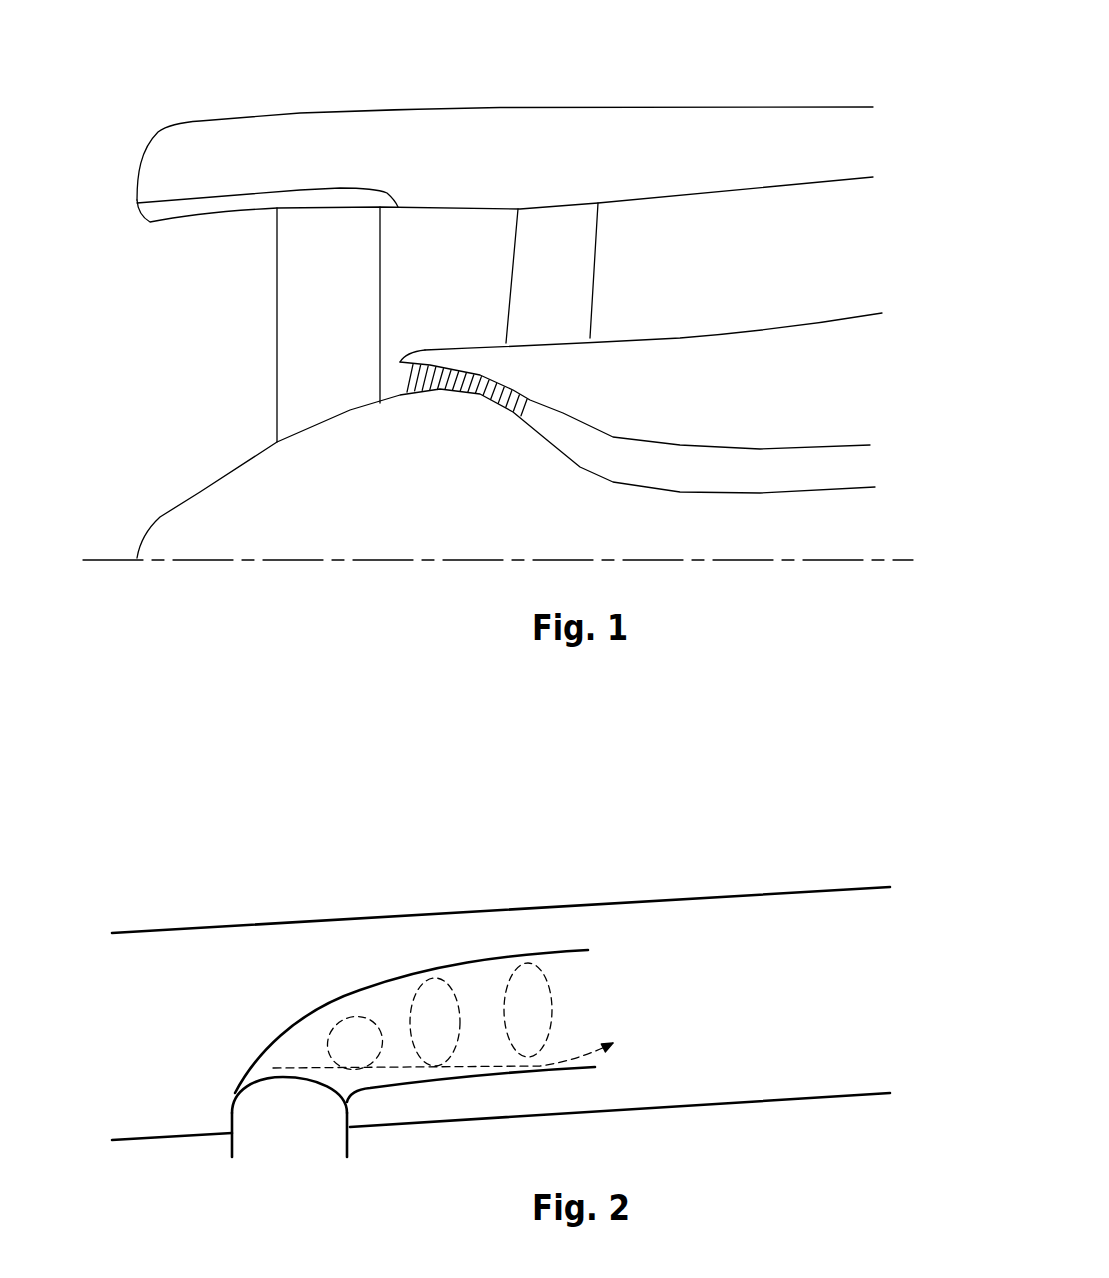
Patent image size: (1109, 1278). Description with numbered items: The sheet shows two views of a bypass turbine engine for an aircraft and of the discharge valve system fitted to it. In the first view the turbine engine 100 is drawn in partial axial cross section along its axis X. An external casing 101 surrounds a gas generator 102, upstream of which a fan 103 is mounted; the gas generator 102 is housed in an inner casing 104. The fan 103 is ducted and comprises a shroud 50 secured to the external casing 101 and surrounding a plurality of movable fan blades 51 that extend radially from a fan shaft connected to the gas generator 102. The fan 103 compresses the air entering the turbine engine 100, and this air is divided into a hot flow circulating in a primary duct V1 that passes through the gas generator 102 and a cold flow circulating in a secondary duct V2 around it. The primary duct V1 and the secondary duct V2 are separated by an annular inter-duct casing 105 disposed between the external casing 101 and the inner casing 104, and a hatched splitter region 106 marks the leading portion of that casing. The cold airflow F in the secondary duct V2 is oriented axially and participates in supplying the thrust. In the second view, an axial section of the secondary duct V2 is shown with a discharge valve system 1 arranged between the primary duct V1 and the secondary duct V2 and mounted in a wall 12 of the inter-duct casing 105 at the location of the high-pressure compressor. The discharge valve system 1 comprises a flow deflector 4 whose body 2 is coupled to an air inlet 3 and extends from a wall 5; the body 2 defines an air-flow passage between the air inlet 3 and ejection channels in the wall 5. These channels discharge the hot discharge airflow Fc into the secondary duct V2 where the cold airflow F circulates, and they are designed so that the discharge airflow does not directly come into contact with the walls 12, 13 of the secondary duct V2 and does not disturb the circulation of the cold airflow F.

In FIG. 1, the turbine engine 100 is at (852, 70).
In FIG. 1, the external casing 101 is at (388, 146).
In FIG. 1, the gas generator 102 is at (706, 416).
In FIG. 1, the fan 103 is at (322, 245).
In FIG. 1, the inner casing 104 is at (857, 484).
In FIG. 1, the inter-duct casing 105 is at (818, 365).
In FIG. 1, the splitter nose 106 is at (478, 342).
In FIG. 1, the shroud 50 is at (193, 207).
In FIG. 1, the fan blades 51 is at (302, 398).
In FIG. 1, the primary duct V1 is at (397, 378).
In FIG. 1, the secondary duct V2 is at (802, 230).
In FIG. 2, the secondary duct V2 is at (112, 963).
In FIG. 1, the cold airflow F is at (180, 363).
In FIG. 2, the cold airflow F is at (140, 1023).
In FIG. 1, the axis X is at (822, 562).
In FIG. 2, the discharge valve system 1 is at (330, 1167).
In FIG. 2, the body 2 is at (350, 1142).
In FIG. 2, the air inlet 3 is at (262, 1155).
In FIG. 2, the flow deflector 4 is at (233, 1110).
In FIG. 2, the wall 5 is at (283, 1078).
In FIG. 2, the wall 12 is at (808, 1097).
In FIG. 2, the wall 13 is at (820, 890).
In FIG. 2, the hot discharge airflow Fc is at (457, 1021).